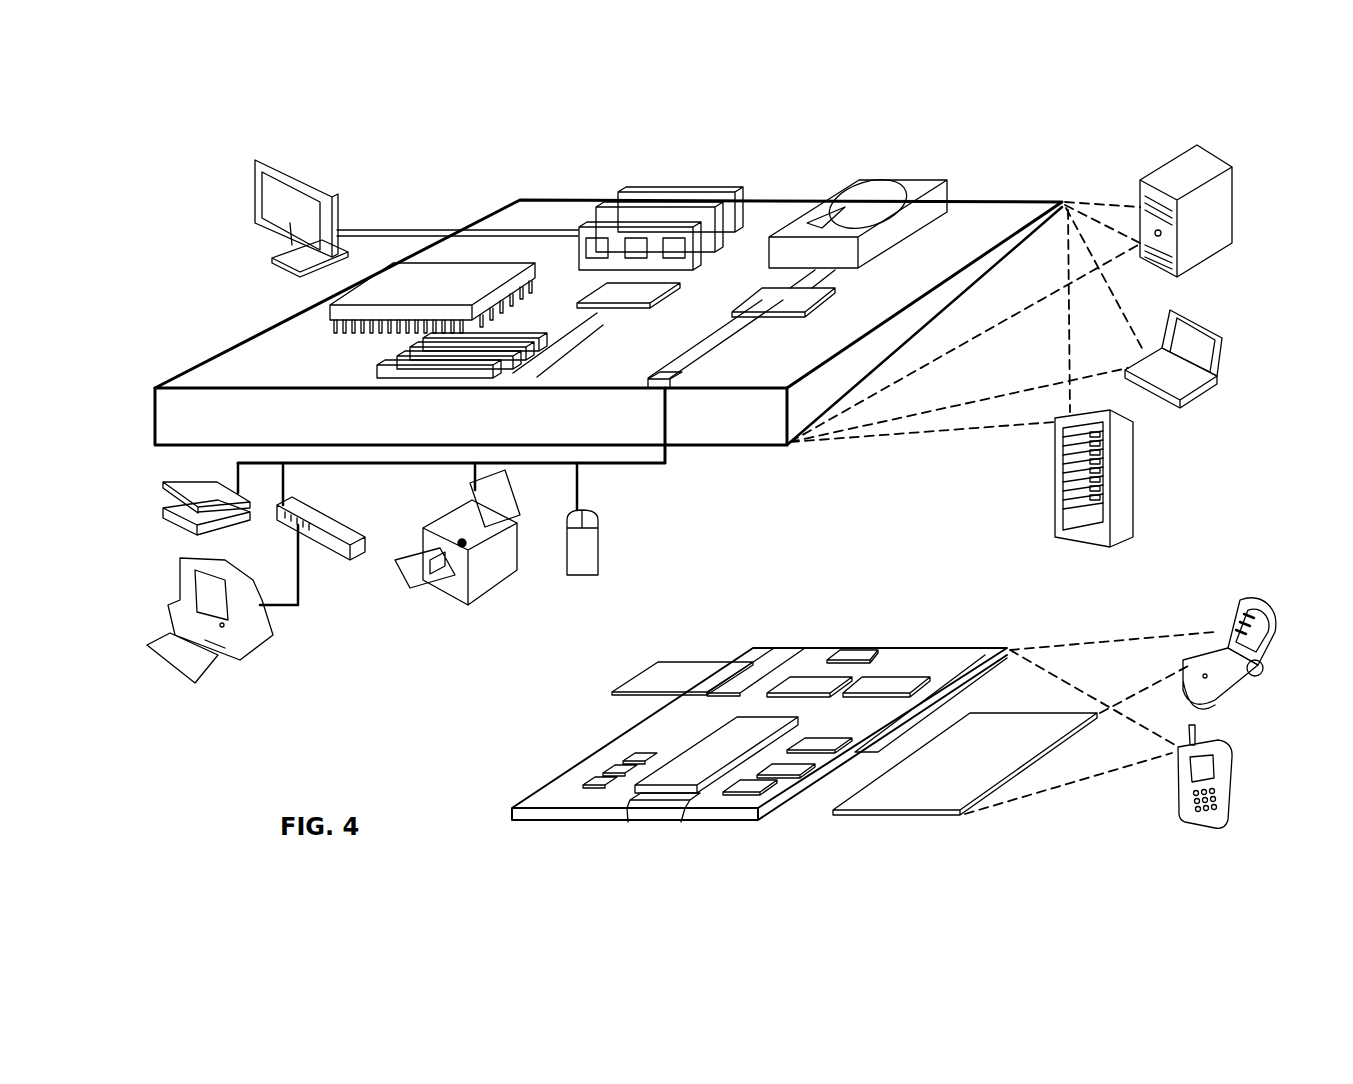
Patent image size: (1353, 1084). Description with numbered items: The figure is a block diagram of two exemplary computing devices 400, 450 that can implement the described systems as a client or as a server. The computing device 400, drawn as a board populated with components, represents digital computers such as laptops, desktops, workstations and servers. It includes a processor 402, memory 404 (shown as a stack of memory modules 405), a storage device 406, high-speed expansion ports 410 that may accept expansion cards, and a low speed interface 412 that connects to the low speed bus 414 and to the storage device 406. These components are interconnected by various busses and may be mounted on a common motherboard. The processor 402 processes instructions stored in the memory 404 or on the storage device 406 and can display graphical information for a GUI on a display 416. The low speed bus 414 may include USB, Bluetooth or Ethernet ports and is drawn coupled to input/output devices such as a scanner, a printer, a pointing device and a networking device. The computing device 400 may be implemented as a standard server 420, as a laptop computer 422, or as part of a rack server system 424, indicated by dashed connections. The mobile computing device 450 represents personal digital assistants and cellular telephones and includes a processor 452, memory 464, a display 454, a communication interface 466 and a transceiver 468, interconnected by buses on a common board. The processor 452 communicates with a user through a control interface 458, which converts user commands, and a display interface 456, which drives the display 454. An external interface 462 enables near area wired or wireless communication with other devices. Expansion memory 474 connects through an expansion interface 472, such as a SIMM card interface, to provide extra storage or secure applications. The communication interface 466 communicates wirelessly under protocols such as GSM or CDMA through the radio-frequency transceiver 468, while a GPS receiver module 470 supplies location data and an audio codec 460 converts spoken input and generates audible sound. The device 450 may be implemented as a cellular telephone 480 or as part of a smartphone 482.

The computing device 400 is at (486, 172).
The processor 402 is at (330, 312).
The memory 404 is at (645, 190).
The memory modules 405 is at (616, 196).
The storage device 406 is at (866, 180).
The high-speed expansion ports 410 is at (398, 353).
The low speed interface 412 is at (762, 295).
The low speed bus 414 is at (668, 392).
The display 416 is at (260, 160).
The standard server 420 is at (1142, 178).
The laptop computer 422 is at (1180, 400).
The rack server system 424 is at (1055, 514).
The computing device 450 is at (583, 706).
The processor 452 is at (690, 772).
The display 454 is at (937, 790).
The display interface 456 is at (746, 792).
The control interface 458 is at (788, 770).
The audio codec 460 is at (822, 752).
The external interface 462 is at (647, 810).
The memory 464 is at (605, 767).
The communication interface 466 is at (797, 680).
The transceiver 468 is at (895, 682).
The GPS receiver module 470 is at (860, 655).
The expansion interface 472 is at (740, 660).
The expansion memory 474 is at (648, 668).
The cellular telephone 480 is at (1236, 606).
The smartphone 482 is at (1178, 782).